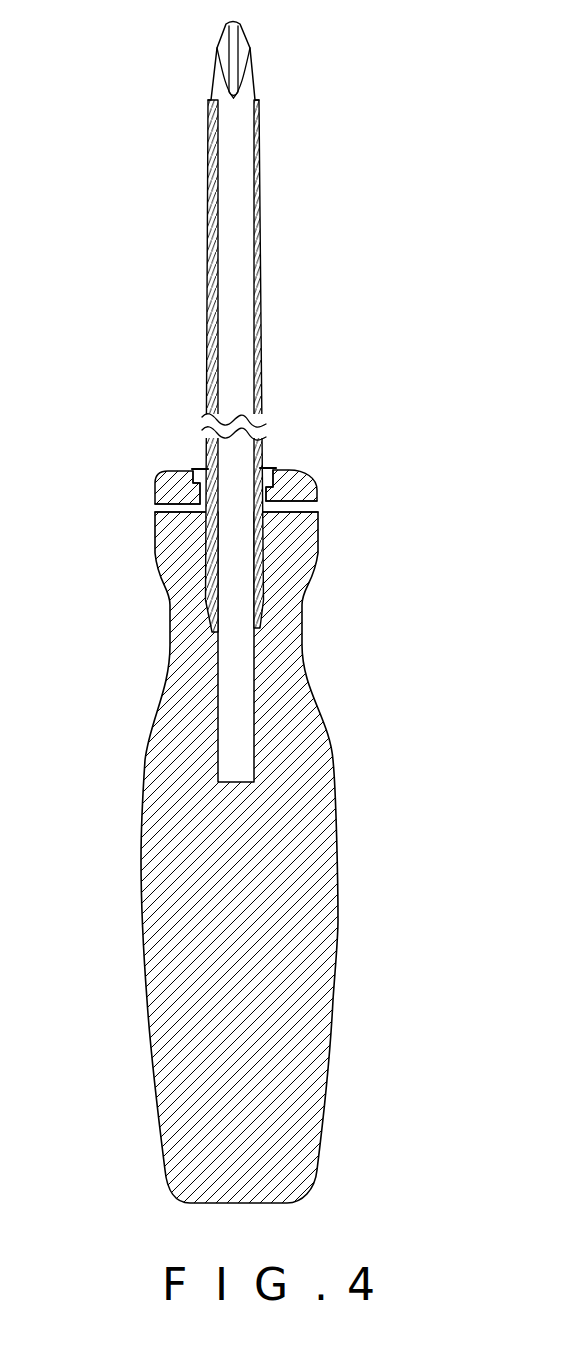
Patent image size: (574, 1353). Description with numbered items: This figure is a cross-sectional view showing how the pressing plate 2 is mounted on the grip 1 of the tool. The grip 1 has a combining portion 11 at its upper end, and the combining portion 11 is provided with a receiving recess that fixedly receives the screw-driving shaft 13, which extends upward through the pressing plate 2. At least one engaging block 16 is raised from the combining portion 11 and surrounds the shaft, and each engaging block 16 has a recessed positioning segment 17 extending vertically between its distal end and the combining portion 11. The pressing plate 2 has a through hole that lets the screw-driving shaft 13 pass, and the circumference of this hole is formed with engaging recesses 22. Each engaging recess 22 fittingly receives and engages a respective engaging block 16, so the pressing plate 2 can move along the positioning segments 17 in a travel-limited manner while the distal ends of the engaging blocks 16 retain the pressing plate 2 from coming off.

The grip 1 is at (317, 932).
The pressing plate 2 is at (293, 485).
The combining portion 11 is at (152, 511).
The screw-driving shaft 13 is at (232, 336).
The engaging block 16 is at (185, 472).
The positioning segment 17 is at (160, 506).
The engaging recess 22 is at (193, 469).